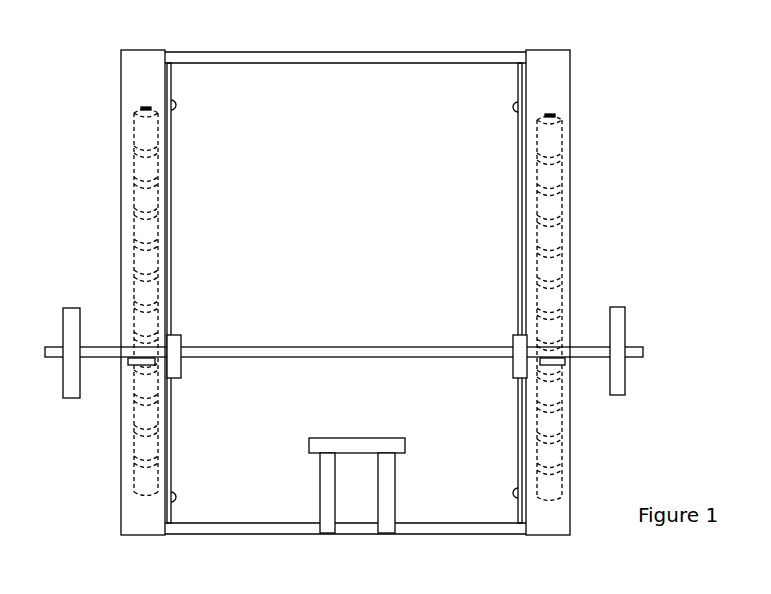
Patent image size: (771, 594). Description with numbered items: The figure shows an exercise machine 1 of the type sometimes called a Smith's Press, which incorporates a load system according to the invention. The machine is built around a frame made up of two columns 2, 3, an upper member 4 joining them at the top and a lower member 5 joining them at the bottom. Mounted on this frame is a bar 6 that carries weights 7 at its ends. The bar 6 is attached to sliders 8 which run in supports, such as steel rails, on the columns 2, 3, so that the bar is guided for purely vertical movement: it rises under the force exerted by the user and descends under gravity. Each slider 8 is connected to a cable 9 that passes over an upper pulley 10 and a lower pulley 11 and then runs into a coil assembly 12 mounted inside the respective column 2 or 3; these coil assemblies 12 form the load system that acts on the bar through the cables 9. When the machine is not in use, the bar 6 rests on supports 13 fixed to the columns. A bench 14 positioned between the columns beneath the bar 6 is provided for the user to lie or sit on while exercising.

The exercise machine 1 is at (663, 166).
The column 2 is at (133, 92).
The column 3 is at (570, 83).
The upper member 4 is at (417, 53).
The lower member 5 is at (248, 535).
The bar 6 is at (308, 347).
The weights 7 is at (68, 325).
The slider 8 is at (176, 340).
The cable 9 is at (171, 227).
The pulley 10 is at (177, 105).
The pulley 11 is at (177, 499).
The coil assembly 12 is at (137, 187).
The support 13 is at (132, 364).
The bench 14 is at (362, 438).